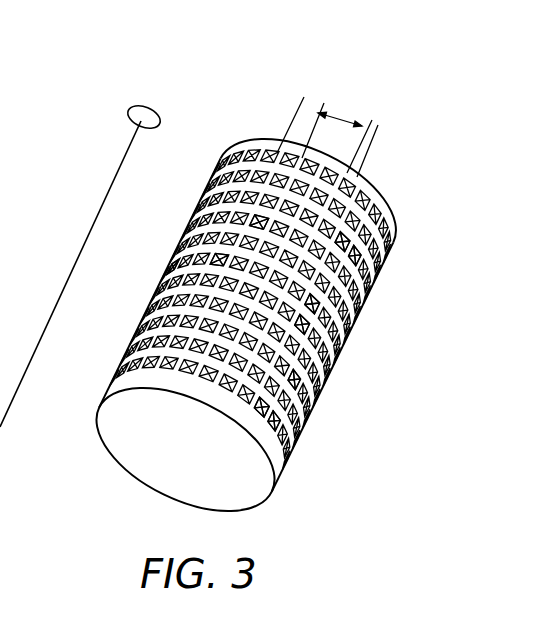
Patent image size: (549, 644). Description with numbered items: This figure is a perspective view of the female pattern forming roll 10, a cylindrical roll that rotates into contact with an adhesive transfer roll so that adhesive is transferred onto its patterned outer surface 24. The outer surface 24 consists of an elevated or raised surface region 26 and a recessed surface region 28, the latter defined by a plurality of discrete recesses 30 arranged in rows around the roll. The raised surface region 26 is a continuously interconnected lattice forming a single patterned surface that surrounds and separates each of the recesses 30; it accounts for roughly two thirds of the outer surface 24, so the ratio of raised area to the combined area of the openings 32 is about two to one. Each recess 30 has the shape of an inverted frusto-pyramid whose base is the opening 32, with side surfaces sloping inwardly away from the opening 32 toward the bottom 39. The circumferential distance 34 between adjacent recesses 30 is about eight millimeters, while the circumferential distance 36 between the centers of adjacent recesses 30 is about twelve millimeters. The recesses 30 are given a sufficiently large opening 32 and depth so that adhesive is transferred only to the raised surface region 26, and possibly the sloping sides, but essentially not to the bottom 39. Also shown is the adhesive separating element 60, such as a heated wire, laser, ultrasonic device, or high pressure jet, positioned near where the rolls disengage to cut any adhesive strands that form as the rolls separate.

The female pattern forming roll 10 is at (366, 186).
The outer surface 24 is at (220, 250).
The raised surface region 26 is at (347, 263).
The recessed surface region 28 is at (298, 322).
The recesses 30 is at (178, 268).
The opening 32 is at (282, 422).
The circumferential distance 34 is at (381, 136).
The circumferential distance between centers 36 is at (300, 102).
The bottom 39 is at (257, 220).
The adhesive separating element 60 is at (118, 168).